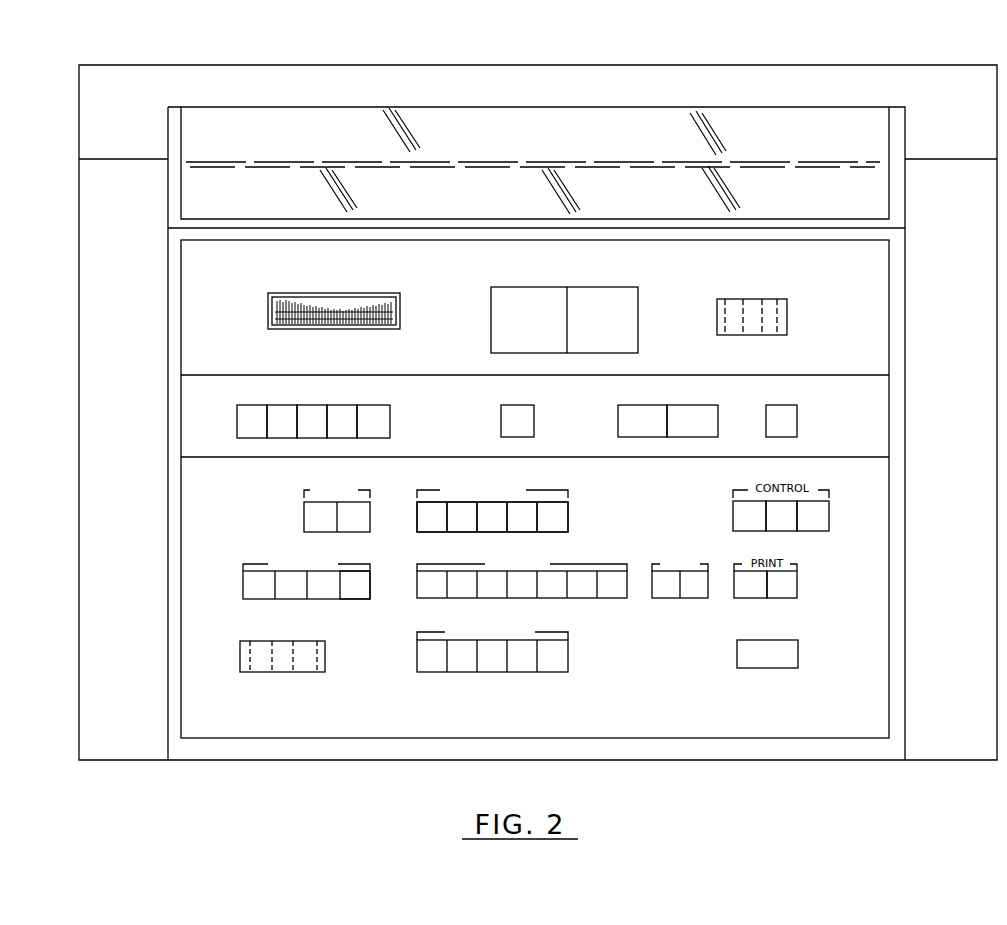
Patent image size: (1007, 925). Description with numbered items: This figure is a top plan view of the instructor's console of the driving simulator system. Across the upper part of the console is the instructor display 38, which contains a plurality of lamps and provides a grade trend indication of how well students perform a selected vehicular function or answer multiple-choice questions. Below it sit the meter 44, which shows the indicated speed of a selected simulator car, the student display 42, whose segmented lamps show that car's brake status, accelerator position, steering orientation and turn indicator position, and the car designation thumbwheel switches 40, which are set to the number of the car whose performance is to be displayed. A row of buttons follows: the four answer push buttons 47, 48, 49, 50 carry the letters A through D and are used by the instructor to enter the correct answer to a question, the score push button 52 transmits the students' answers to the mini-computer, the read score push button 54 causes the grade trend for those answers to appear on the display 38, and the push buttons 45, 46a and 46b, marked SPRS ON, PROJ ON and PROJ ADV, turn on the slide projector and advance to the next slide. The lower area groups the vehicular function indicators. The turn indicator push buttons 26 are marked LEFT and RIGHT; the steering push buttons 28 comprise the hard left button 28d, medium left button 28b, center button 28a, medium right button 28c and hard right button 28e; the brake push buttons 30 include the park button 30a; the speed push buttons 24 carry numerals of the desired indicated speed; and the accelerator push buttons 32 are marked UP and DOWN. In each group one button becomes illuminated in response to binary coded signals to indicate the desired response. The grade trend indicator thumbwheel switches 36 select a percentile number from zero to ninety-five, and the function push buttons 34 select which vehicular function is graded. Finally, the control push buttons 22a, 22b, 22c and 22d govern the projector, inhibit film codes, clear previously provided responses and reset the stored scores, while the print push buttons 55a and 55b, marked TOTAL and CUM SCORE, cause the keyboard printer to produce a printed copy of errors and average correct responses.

The instructor display 38 is at (601, 180).
The meter 44 is at (344, 305).
The student display 42 is at (513, 293).
The car designation thumbwheel switches 40 is at (750, 299).
The answer push button 47 is at (252, 406).
The answer push button 48 is at (290, 386).
The answer push button 49 is at (327, 386).
The answer push button 50 is at (345, 406).
The score push button 52 is at (371, 405).
The read score push button 54 is at (518, 405).
The projector on push button 46a is at (650, 405).
The projector advance push button 46b is at (707, 405).
The slide projector push button 45 is at (787, 405).
The steering push buttons 28 is at (501, 480).
The center steering push button 28a is at (495, 530).
The medium left steering push button 28b is at (462, 530).
The medium right steering push button 28c is at (530, 505).
The hard left steering push button 28d is at (432, 505).
The hard right steering push button 28e is at (567, 516).
The turn indicator push buttons 26 is at (300, 517).
The brake push buttons 30 is at (249, 607).
The park brake push button 30a is at (352, 598).
The grade trend indicator thumbwheel switches 36 is at (278, 677).
The function push buttons 34 is at (470, 677).
The speed push buttons 24 is at (590, 600).
The accelerator push buttons 32 is at (689, 600).
The push button 22a is at (805, 656).
The code off push button 22b is at (745, 532).
The code clear push button 22c is at (787, 532).
The reset score push button 22d is at (815, 533).
The total push button 55a is at (752, 600).
The cumulative score push button 55b is at (782, 600).